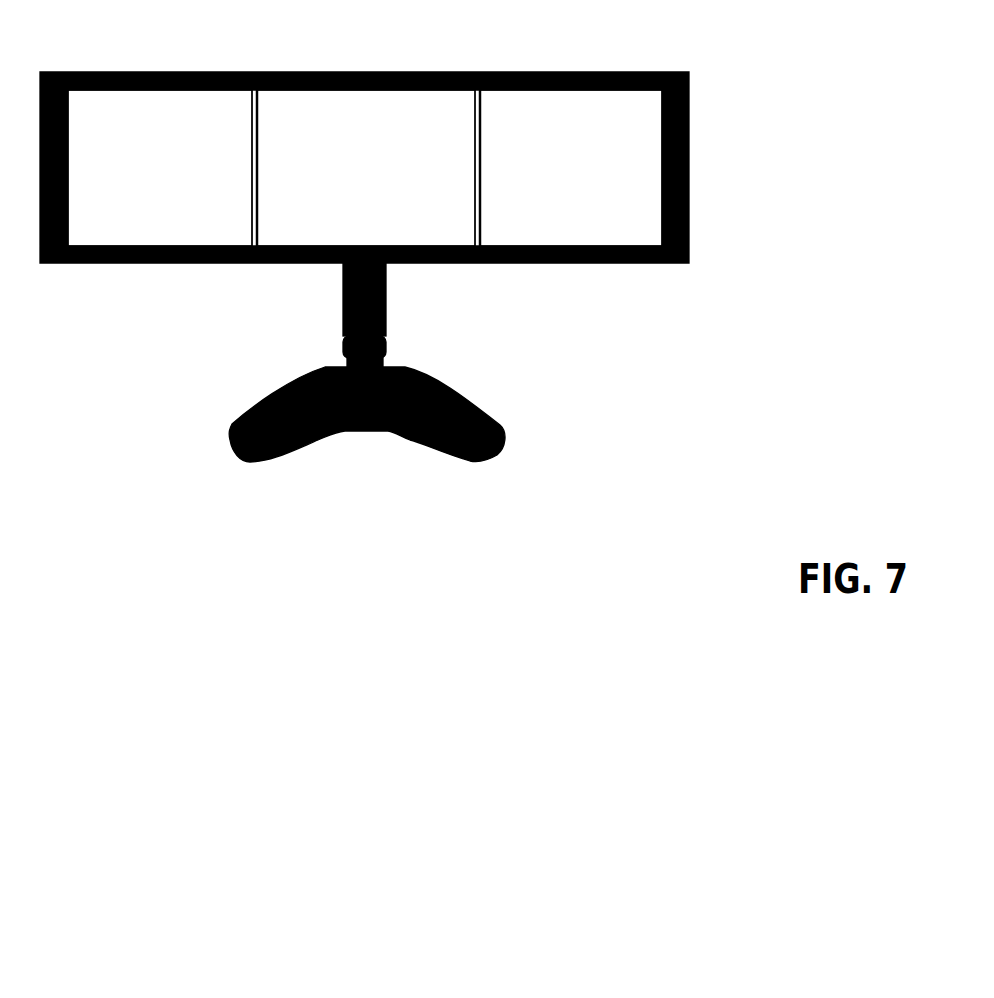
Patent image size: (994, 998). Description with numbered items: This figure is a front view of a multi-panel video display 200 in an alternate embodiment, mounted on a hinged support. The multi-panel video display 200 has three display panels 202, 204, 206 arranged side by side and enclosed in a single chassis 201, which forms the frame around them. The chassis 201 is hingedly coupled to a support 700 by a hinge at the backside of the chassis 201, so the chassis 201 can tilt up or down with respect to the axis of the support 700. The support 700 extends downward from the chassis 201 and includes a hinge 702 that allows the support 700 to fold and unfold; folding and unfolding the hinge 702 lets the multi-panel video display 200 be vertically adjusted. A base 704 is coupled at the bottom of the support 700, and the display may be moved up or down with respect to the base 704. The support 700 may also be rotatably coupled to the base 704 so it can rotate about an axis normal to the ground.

The multi-panel video display 200 is at (409, 136).
The chassis 201 is at (690, 170).
The display panel 202 is at (182, 72).
The display panel 204 is at (360, 72).
The display panel 206 is at (567, 72).
The support 700 is at (387, 292).
The hinge 702 is at (343, 347).
The base 704 is at (497, 425).